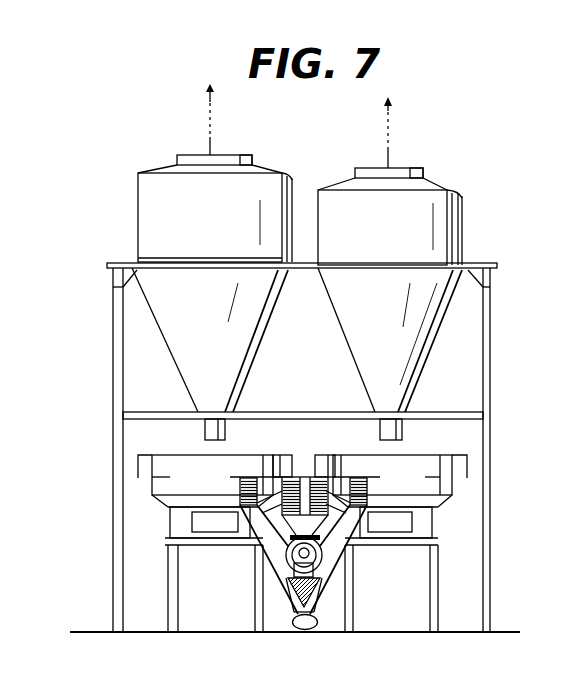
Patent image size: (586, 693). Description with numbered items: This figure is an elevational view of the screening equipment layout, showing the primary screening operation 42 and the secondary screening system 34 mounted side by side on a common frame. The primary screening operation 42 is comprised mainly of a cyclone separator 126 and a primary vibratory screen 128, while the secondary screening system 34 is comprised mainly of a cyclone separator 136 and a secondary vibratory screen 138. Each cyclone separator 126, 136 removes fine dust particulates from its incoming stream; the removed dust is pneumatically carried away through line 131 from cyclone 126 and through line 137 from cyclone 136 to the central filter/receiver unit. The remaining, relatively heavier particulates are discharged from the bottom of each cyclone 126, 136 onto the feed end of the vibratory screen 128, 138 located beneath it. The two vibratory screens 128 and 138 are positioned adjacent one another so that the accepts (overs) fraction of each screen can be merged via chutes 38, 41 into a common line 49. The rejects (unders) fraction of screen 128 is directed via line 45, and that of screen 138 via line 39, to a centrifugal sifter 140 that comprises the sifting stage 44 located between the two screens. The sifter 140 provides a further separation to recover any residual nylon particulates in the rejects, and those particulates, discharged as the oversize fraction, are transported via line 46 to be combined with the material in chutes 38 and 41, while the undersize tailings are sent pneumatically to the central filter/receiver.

The secondary screening system 34 is at (148, 401).
The primary screening operation 42 is at (472, 360).
The cyclone separator 136 is at (238, 233).
The cyclone separator 126 is at (407, 233).
The line 137 is at (208, 108).
The line 131 is at (391, 109).
The secondary vibratory screen 138 is at (211, 487).
The primary vibratory screen 128 is at (421, 485).
The line 39 is at (283, 464).
The line 45 is at (322, 466).
The centrifugal sifter 140 is at (288, 580).
The chute 38 is at (277, 565).
The sifting stage 44 is at (330, 554).
The chute 41 is at (326, 573).
The common line 49 is at (320, 623).
The line 46 is at (312, 613).